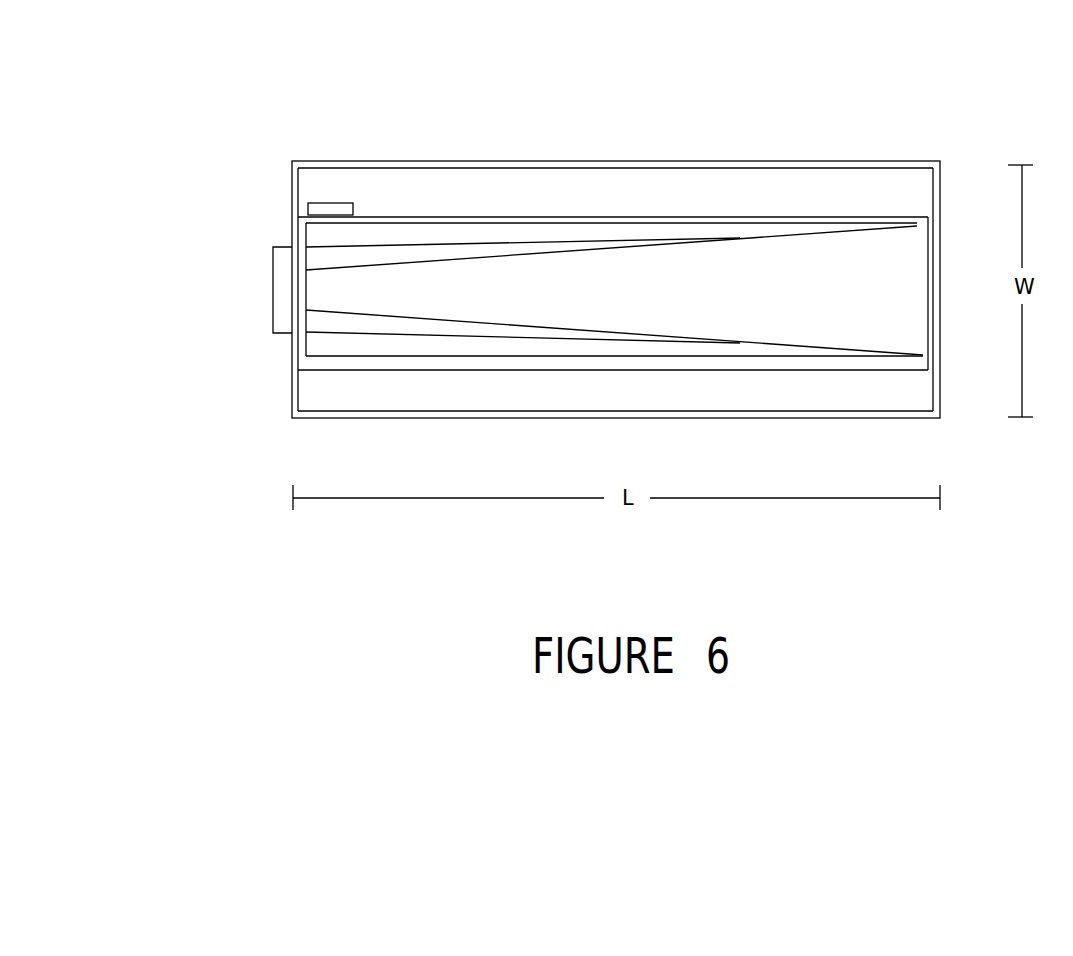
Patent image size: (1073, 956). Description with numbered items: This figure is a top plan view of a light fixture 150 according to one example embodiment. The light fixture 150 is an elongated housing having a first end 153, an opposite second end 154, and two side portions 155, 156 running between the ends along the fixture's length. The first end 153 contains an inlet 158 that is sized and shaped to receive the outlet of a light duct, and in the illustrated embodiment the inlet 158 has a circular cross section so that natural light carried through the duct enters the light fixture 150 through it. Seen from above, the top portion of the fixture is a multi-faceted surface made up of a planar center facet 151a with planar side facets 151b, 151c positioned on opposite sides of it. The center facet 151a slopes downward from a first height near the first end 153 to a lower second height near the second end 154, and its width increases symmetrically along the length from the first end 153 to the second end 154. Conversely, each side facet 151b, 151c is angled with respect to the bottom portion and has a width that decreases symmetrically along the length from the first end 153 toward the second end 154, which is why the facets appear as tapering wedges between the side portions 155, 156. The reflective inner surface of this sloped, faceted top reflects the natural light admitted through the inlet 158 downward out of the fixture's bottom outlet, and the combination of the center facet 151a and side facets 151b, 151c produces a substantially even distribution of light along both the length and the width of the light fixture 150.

The light fixture 150 is at (612, 140).
The planar center facet 151a is at (613, 293).
The planar side facet 151b is at (302, 233).
The planar side facet 151c is at (300, 349).
The first end 153 is at (296, 393).
The second end 154 is at (941, 407).
The side portion 155 is at (747, 161).
The side portion 156 is at (742, 422).
The inlet 158 is at (268, 282).